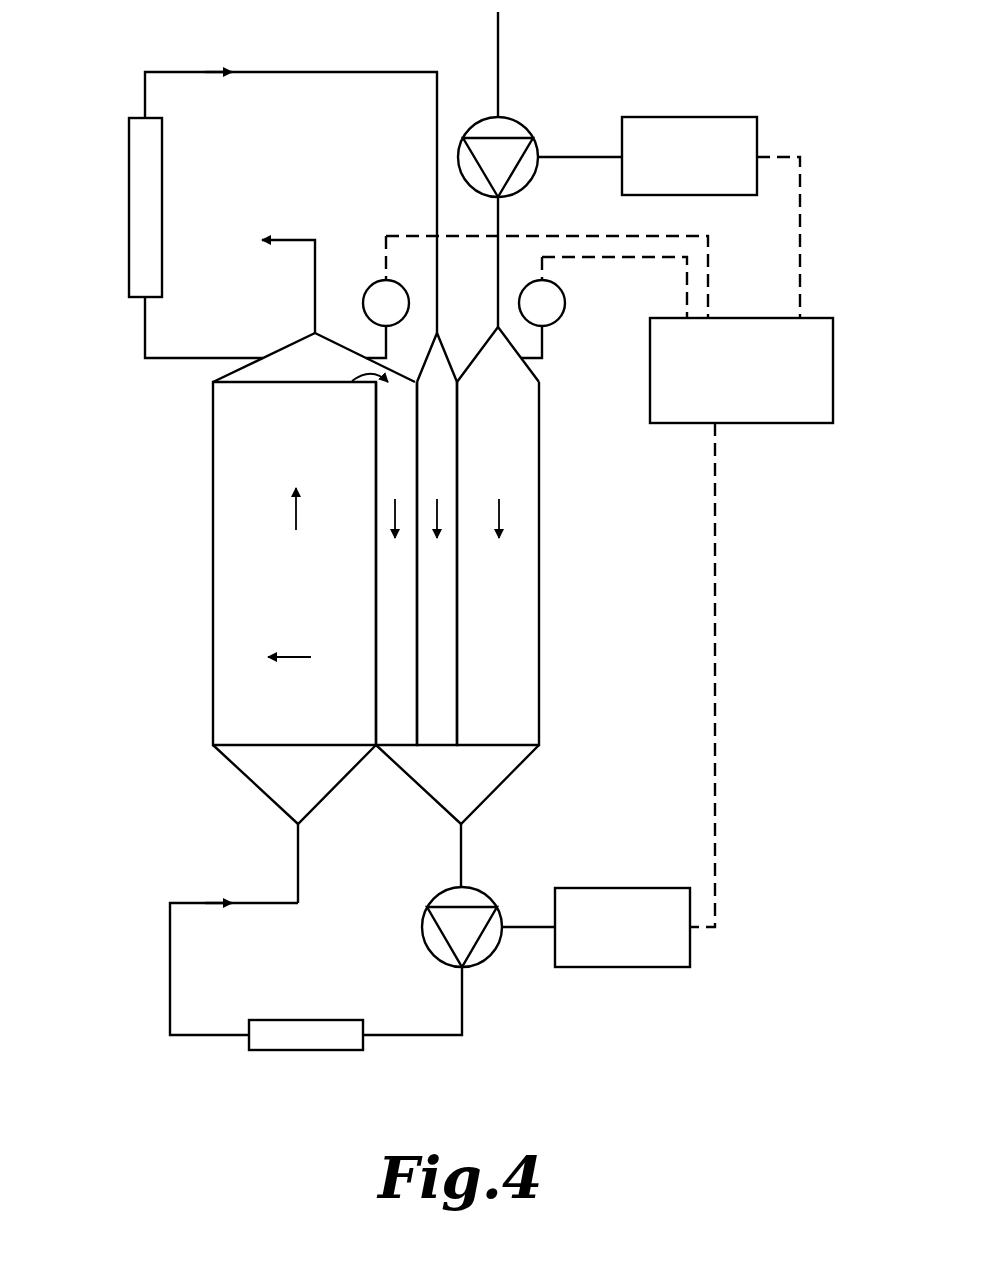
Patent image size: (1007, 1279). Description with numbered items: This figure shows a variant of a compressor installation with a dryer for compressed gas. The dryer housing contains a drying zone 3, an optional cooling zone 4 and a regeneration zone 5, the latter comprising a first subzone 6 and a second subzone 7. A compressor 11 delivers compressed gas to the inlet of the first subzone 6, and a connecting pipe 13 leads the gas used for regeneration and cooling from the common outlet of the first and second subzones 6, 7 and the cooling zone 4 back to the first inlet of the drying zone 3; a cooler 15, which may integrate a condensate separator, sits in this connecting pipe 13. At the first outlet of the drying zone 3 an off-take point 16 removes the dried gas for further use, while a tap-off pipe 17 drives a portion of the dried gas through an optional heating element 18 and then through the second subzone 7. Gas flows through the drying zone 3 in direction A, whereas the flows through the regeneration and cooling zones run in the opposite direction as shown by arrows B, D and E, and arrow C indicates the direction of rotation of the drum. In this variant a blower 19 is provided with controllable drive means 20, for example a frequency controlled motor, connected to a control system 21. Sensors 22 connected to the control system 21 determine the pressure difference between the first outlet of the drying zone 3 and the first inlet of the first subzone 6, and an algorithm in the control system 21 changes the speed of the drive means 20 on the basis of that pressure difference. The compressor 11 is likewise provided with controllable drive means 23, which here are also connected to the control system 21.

The drying zone 3 is at (252, 591).
The cooling zone 4 is at (400, 596).
The regeneration zone 5 is at (490, 763).
The first subzone 6 is at (527, 428).
The second subzone 7 is at (430, 688).
The compressor 11 is at (535, 172).
The connecting pipe 13 is at (437, 1036).
The cooler 15 is at (338, 1042).
The off-take point 16 is at (315, 333).
The tap-off pipe 17 is at (150, 360).
The heating element 18 is at (129, 253).
The blower 19 is at (490, 965).
The controllable drive means 20 is at (657, 950).
The control system 21 is at (748, 407).
The sensors 22 is at (370, 282).
The controllable drive means 23 is at (713, 125).